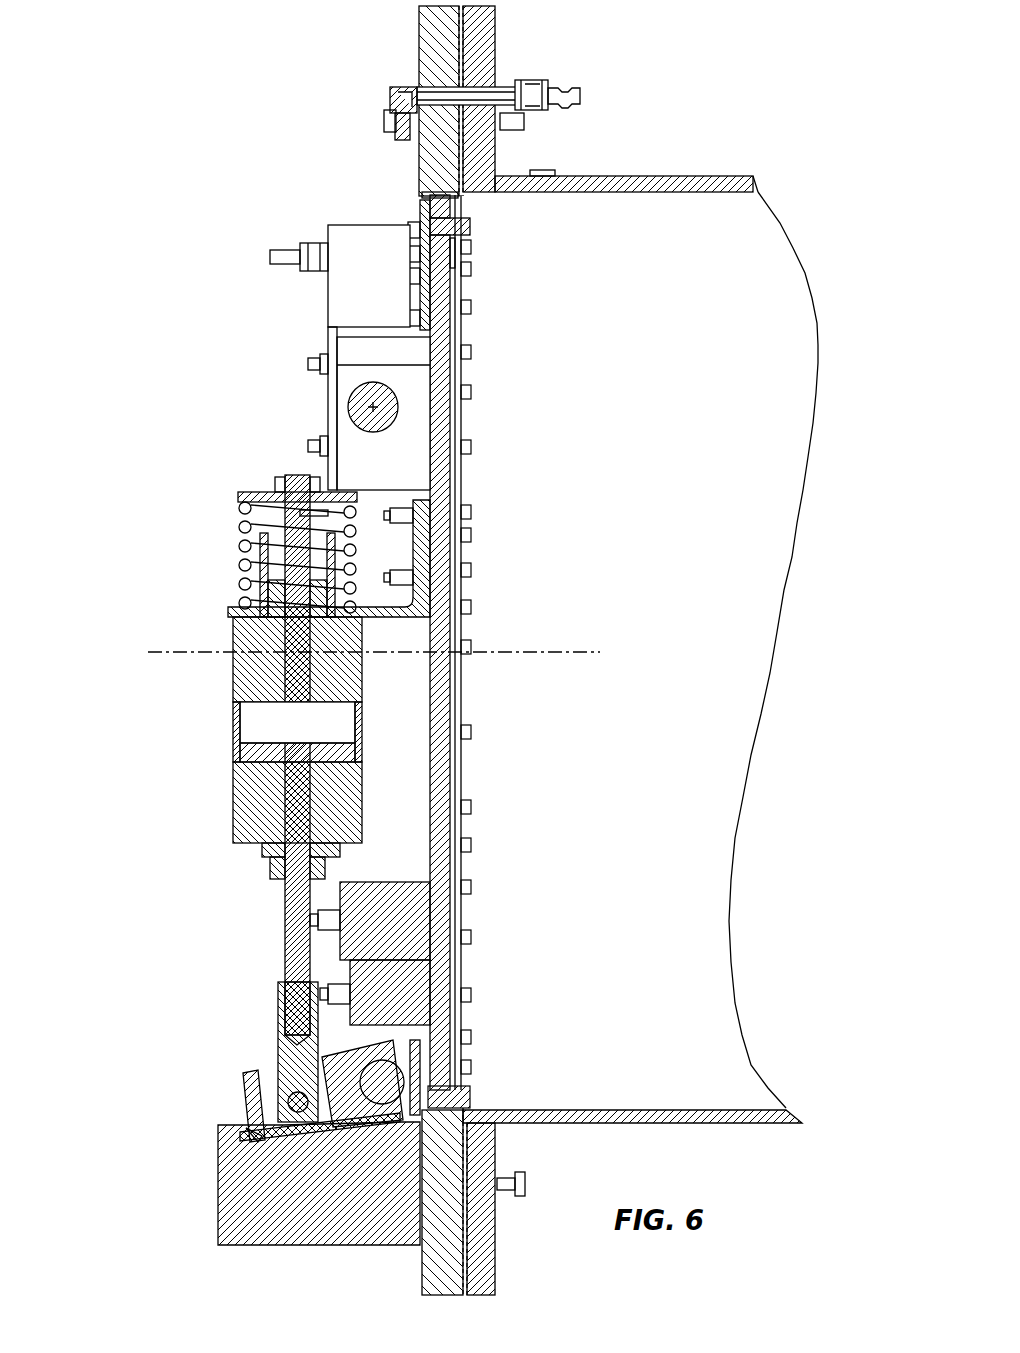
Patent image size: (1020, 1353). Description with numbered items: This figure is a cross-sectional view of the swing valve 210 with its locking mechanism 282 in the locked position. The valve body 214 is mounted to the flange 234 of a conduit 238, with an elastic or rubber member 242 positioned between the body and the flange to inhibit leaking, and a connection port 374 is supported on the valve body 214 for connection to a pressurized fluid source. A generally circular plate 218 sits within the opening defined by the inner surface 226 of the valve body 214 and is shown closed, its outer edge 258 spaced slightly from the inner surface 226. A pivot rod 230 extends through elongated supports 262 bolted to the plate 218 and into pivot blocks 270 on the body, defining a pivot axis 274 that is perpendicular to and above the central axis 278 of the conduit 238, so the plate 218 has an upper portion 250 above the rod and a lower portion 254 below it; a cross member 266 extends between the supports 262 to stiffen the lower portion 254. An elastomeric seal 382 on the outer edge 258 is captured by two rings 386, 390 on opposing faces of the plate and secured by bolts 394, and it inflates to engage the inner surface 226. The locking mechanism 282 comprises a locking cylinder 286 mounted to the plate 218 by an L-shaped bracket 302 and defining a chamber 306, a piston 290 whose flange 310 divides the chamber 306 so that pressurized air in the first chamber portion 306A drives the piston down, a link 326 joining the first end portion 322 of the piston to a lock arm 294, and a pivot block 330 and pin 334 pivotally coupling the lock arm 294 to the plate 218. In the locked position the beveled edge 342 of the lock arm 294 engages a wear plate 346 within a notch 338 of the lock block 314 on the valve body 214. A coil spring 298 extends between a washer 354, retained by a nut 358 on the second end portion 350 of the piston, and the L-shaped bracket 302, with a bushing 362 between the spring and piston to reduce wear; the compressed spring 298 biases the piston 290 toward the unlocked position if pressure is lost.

The swing valve 210 is at (198, 175).
The valve body 214 is at (419, 26).
The plate 218 is at (440, 690).
The inner surface 226 is at (462, 202).
The pivot rod 230 is at (385, 400).
The flange 234 is at (497, 12).
The conduit 238 is at (753, 176).
The elastic or rubber member 242 is at (495, 1280).
The upper portion 250 is at (440, 320).
The lower portion 254 is at (445, 940).
The outer edge 258 is at (480, 1110).
The elongated supports 262 is at (385, 352).
The cross member 266 is at (395, 905).
The pivot blocks 270 is at (352, 232).
The pivot axis 274 is at (330, 402).
The central axis 278 is at (540, 648).
The locking mechanism 282 is at (150, 592).
The locking cylinder 286 is at (242, 820).
The piston 290 is at (300, 785).
The lock arm 294 is at (248, 1096).
The spring 298 is at (245, 522).
The L-shaped bracket 302 is at (424, 542).
The chamber 306 is at (340, 720).
The first chamber portion 306A is at (248, 722).
The flange 310 is at (242, 750).
The lock block 314 is at (335, 1222).
The first end portion 322 is at (285, 998).
The link 326 is at (276, 1058).
The pivot block 330 is at (400, 992).
The pin 334 is at (412, 1048).
The notch 338 is at (290, 1138).
The beveled edge 342 is at (250, 1140).
The wear plate 346 is at (250, 1134).
The second end portion 350 is at (350, 515).
The washer 354 is at (248, 493).
The nut 358 is at (290, 478).
The bushing 362 is at (262, 540).
The connection port 374 is at (390, 90).
The elastomeric seal 382 is at (430, 205).
The ring 386 is at (408, 237).
The ring 390 is at (471, 252).
The bolts 394 is at (471, 235).